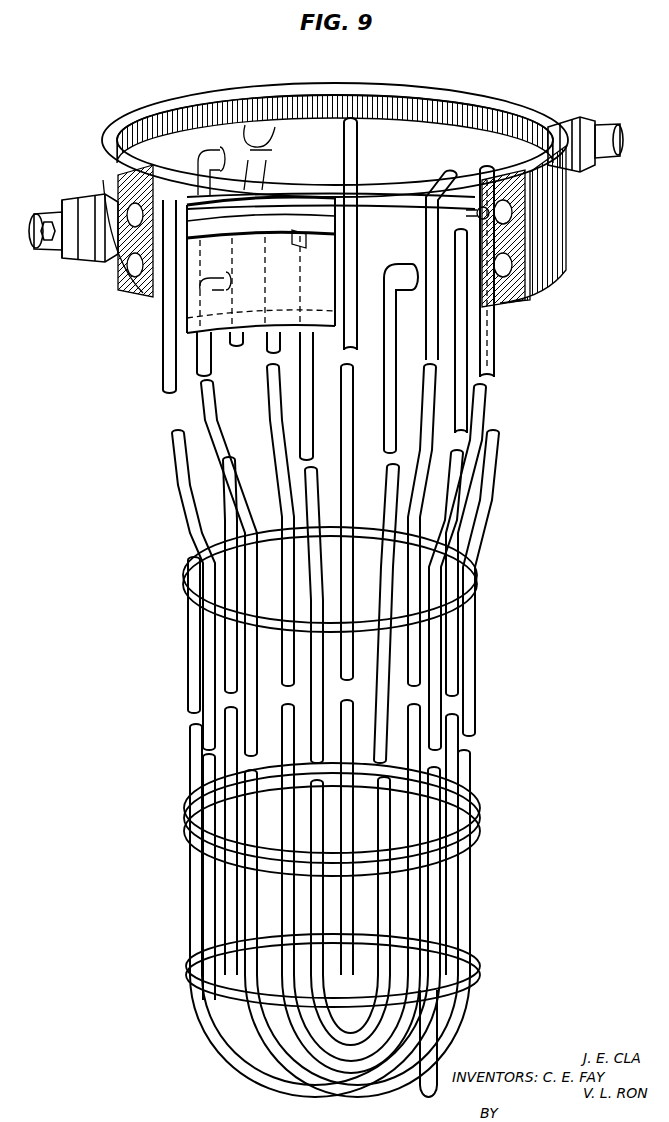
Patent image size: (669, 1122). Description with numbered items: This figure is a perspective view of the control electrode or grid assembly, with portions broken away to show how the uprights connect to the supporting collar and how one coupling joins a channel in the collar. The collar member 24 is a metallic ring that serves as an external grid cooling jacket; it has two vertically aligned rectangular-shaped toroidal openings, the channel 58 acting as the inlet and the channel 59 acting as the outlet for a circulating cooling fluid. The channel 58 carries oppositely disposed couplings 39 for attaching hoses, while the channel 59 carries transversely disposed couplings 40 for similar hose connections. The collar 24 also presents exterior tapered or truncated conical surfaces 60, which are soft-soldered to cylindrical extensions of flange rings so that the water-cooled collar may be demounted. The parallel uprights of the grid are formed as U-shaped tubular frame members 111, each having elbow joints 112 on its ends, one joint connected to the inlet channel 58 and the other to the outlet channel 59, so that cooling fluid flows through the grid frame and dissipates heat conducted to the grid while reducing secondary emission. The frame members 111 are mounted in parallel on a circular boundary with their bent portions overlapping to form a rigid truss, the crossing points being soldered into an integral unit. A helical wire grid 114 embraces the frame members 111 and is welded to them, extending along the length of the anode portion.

The collar member 24 is at (556, 226).
The couplings 39 is at (244, 83).
The couplings 40 is at (80, 198).
The toroidal opening 58 is at (523, 275).
The toroidal opening 59 is at (526, 208).
The exterior tapered or truncated conical surfaces 60 is at (394, 98).
The U-shaped tubular frame members 111 is at (455, 557).
The elbow joints 112 is at (432, 170).
The helical wire grid 114 is at (448, 586).